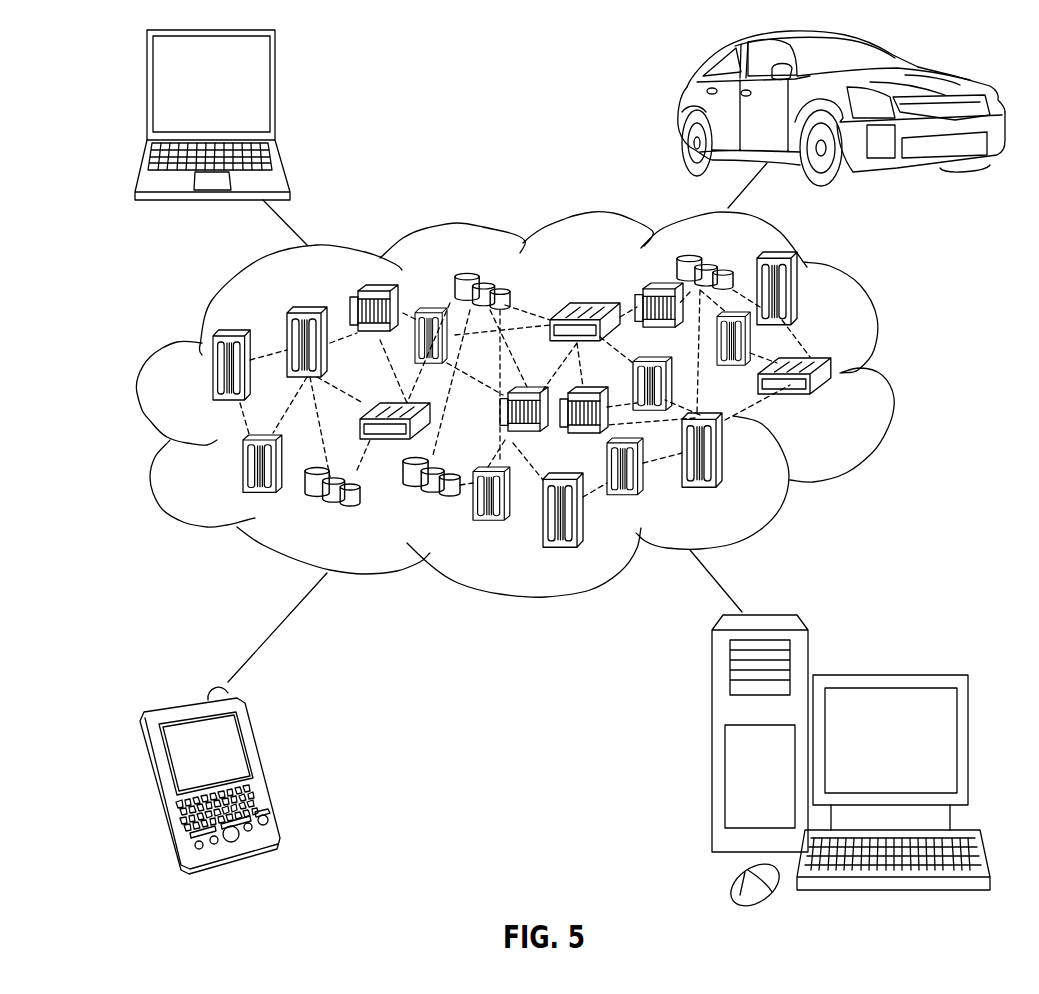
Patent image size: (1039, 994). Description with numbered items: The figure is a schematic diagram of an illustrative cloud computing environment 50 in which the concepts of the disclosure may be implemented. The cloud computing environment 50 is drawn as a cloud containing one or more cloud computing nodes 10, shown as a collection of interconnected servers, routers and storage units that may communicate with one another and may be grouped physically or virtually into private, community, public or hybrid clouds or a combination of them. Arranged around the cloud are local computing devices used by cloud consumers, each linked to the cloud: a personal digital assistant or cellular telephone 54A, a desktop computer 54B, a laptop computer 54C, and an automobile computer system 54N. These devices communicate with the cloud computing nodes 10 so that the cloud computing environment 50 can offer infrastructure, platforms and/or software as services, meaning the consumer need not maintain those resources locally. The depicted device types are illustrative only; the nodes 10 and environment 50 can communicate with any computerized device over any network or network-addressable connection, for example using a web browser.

The cloud computing environment 50 is at (886, 374).
The cloud computing nodes 10 is at (835, 411).
The personal digital assistant or cellular telephone 54A is at (265, 773).
The desktop computer 54B is at (888, 673).
The laptop computer 54C is at (277, 92).
The automobile computer system 54N is at (684, 108).